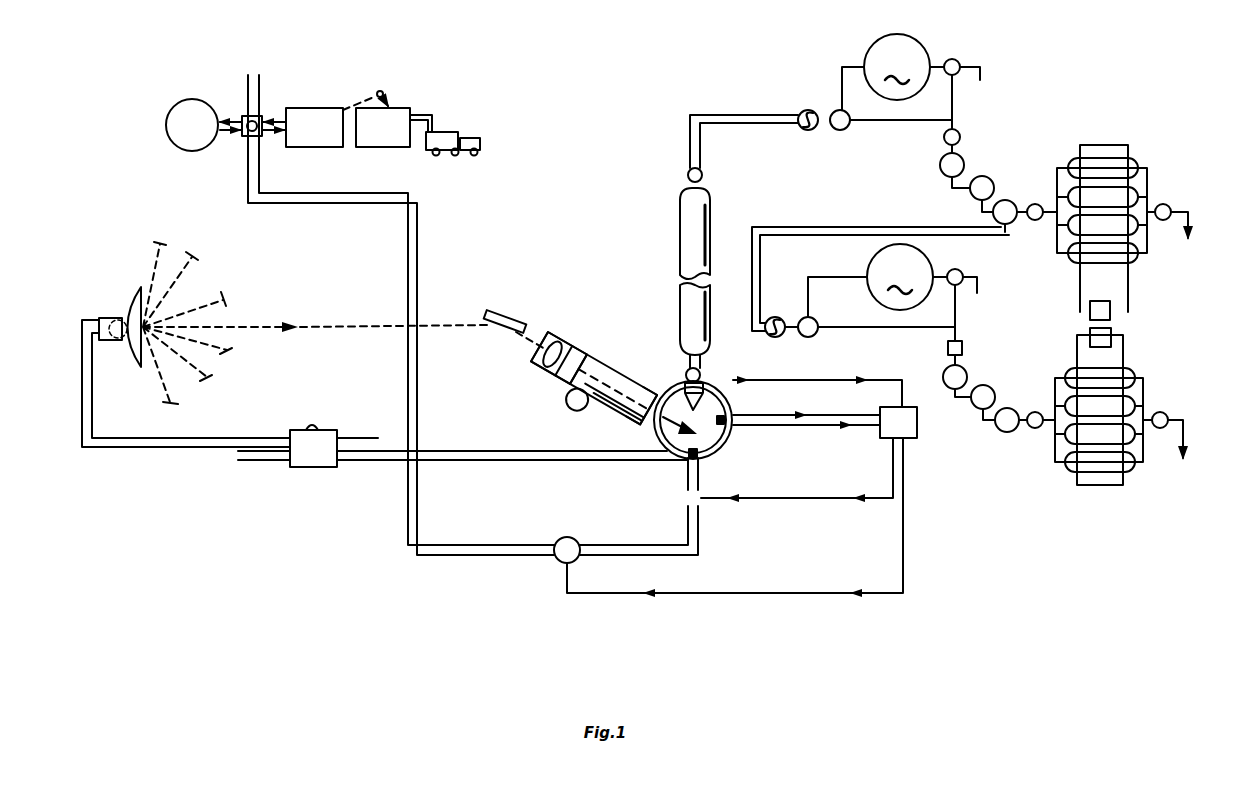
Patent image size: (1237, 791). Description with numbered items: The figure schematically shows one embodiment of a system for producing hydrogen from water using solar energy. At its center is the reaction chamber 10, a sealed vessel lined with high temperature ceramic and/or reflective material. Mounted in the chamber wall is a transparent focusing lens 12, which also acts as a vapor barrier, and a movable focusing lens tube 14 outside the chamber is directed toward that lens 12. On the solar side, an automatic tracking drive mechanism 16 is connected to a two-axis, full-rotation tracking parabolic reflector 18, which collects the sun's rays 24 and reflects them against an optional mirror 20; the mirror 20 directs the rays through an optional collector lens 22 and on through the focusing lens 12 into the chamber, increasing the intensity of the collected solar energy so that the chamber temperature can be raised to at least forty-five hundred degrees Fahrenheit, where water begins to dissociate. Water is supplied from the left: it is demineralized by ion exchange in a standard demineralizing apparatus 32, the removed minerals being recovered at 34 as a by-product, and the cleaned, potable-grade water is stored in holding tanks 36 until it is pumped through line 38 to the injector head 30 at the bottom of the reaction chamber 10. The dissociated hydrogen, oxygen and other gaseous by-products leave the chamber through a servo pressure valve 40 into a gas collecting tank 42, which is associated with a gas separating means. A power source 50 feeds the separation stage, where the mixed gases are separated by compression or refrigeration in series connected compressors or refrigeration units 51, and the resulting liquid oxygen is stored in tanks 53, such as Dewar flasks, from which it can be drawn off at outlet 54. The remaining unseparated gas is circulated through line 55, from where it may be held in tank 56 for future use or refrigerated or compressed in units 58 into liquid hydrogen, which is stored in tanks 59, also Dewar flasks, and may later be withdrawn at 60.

The reaction chamber 10 is at (734, 443).
The transparent focusing lens 12 is at (660, 394).
The movable focusing lens tube 14 is at (532, 366).
The automatic tracking drive mechanism 16 is at (109, 316).
The tracking parabolic reflector 18 is at (129, 356).
The mirror 20 is at (505, 312).
The collector lens 22 is at (565, 338).
The light rays 24 is at (208, 381).
The injector head 30 is at (708, 454).
The demineralizing apparatus 32 is at (302, 108).
The mineral recovery 34 is at (400, 106).
The holding tanks 36 is at (164, 125).
The line 38 is at (454, 546).
The servo pressure valve 40 is at (702, 372).
The gas collecting tank 42 is at (713, 234).
The first power supply 50 is at (889, 82).
The series connected compressors or refrigeration units 51 is at (966, 160).
The liquid oxygen storage tanks 53 is at (1142, 164).
The first outlet 54 is at (1195, 220).
The line 55 is at (829, 230).
The tank 56 is at (871, 290).
The refrigeration or compression units 58 is at (989, 386).
The liquid hydrogen storage tanks 59 is at (1066, 464).
The liquid hydrogen withdrawal point 60 is at (1191, 426).